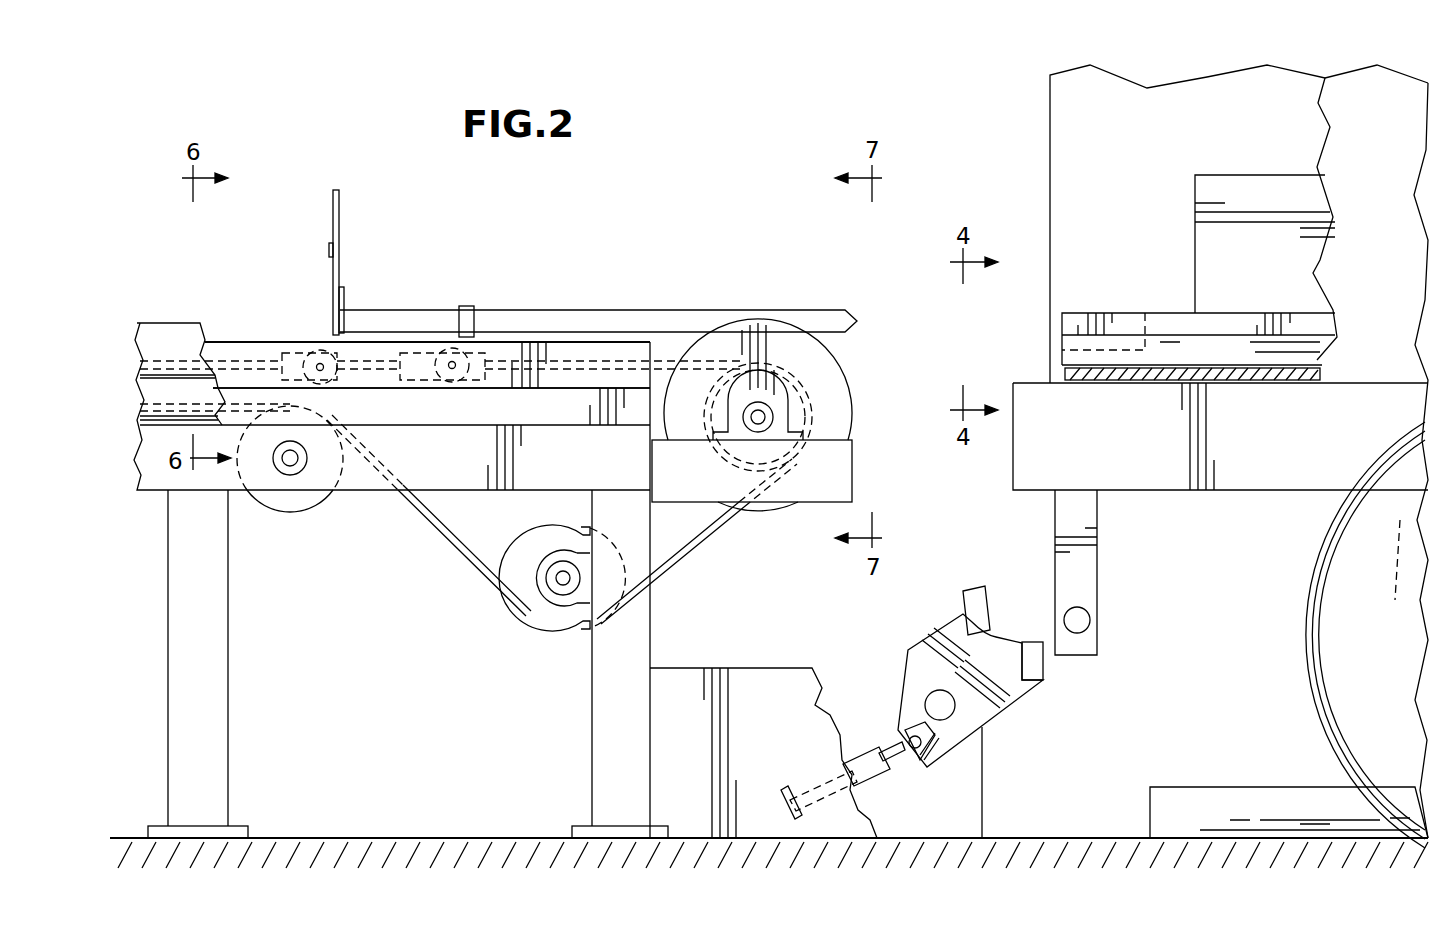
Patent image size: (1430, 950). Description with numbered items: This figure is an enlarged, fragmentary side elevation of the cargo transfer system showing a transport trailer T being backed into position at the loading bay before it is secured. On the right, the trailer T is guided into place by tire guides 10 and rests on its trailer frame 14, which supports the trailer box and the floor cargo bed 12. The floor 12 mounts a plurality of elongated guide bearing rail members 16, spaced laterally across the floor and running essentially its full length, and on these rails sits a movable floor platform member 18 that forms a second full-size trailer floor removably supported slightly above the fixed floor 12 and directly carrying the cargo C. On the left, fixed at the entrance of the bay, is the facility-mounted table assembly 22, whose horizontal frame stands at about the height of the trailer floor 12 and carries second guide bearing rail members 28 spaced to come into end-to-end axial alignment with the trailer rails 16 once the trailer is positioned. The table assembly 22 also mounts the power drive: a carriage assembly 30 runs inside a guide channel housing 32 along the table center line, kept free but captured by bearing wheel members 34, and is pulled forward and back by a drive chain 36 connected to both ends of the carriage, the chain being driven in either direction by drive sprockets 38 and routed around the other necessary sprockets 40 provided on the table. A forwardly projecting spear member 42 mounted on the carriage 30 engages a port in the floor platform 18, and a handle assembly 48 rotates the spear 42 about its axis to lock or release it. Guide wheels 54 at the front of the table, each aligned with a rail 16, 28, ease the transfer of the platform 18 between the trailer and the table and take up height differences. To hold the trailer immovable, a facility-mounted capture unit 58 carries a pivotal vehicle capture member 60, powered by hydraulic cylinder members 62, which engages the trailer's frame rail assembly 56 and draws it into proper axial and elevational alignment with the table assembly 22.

The tire guides 10 is at (1289, 783).
The floor cargo bed 12 is at (1192, 318).
The trailer frame 14 is at (1220, 461).
The guide bearing rail members 16 is at (1222, 349).
The floor platform member 18 is at (1198, 312).
The table assembly 22 is at (602, 497).
The second guide bearing rail members 28 is at (181, 354).
The carriage assembly 30 is at (427, 325).
The guide channel housing 32 is at (427, 318).
The bearing wheel members 34 is at (383, 375).
The drive chain 36 is at (468, 449).
The drive sprockets 38 is at (532, 563).
The pulley 40 is at (524, 468).
The spear member 42 is at (598, 294).
The handle assembly 48 is at (365, 262).
The guide wheels 54 is at (780, 415).
The frame rail assembly 56 is at (1103, 572).
The capture unit 58 is at (816, 728).
The vehicle capture member 60 is at (992, 676).
The hydraulic cylinder members 62 is at (843, 751).
The transport trailer T is at (1218, 456).
The cargo C is at (1265, 215).